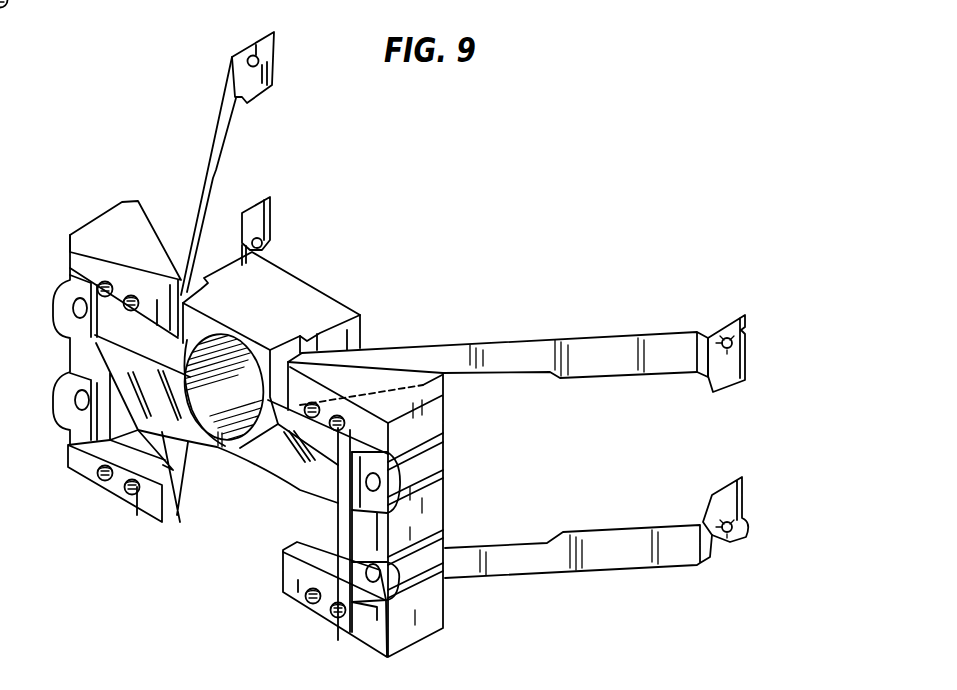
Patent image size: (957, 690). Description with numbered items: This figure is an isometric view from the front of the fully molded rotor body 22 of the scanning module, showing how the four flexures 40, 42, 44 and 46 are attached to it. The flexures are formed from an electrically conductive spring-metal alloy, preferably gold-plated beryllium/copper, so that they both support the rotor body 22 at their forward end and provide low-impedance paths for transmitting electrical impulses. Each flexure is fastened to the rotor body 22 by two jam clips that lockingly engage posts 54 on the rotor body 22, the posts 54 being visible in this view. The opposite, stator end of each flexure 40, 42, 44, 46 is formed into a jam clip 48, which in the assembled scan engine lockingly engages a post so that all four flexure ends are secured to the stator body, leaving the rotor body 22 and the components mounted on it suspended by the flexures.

The rotor body 22 is at (279, 320).
The flexure 40 is at (622, 348).
The flexure 42 is at (622, 548).
The flexure 44 is at (215, 135).
The flexure 46 is at (239, 245).
The jam clip 48 is at (260, 60).
The posts 54 is at (99, 288).